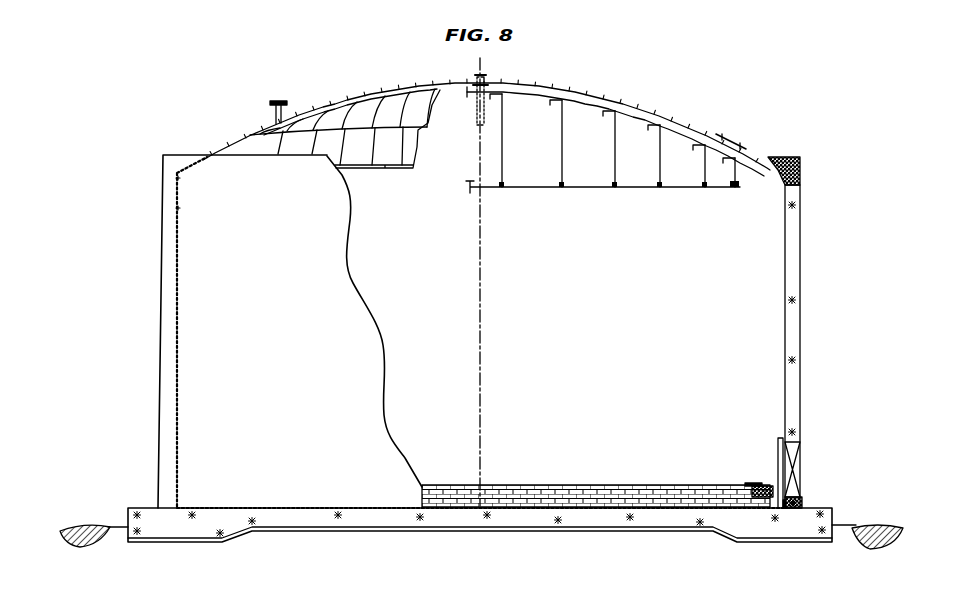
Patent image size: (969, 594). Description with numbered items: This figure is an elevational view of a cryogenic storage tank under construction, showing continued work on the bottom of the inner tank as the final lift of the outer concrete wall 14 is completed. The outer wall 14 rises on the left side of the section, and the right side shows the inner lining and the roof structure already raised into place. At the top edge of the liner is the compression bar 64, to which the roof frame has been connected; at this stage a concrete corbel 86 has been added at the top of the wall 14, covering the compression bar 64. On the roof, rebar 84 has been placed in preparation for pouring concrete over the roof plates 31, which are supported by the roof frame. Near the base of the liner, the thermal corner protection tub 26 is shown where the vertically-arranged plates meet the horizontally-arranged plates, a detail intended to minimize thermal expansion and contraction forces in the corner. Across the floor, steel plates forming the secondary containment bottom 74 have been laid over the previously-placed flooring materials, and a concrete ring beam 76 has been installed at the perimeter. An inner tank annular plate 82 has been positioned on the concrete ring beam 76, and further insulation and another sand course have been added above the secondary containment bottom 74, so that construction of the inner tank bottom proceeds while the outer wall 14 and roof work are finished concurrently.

The outer concrete wall 14 is at (162, 455).
The roof plates 31 is at (395, 113).
The rebar 84 is at (729, 133).
The concrete corbel 86 is at (793, 153).
The compression bar 64 is at (779, 175).
The thermal corner protection tub 26 is at (779, 441).
The inner tank annular plate 82 is at (757, 487).
The concrete ring beam 76 is at (789, 489).
The secondary containment bottom 74 is at (760, 510).